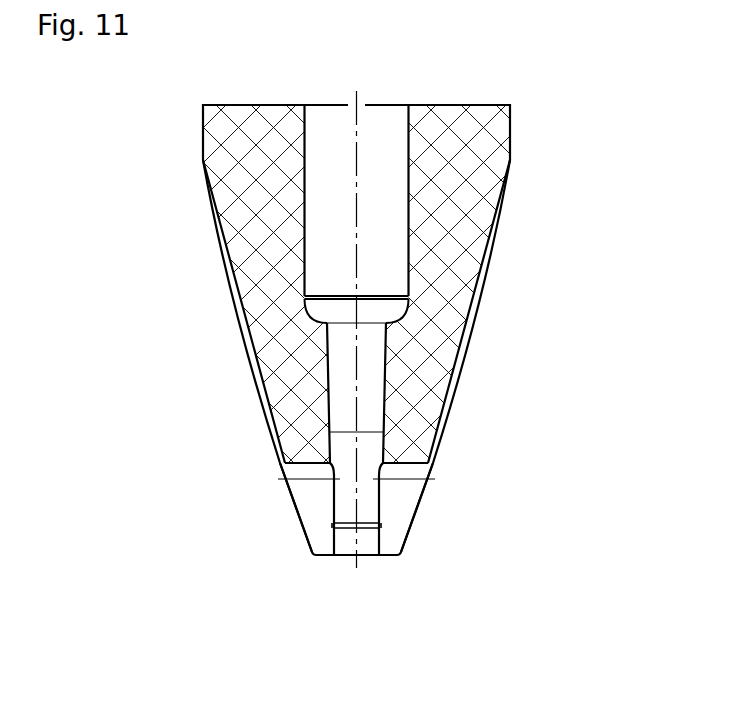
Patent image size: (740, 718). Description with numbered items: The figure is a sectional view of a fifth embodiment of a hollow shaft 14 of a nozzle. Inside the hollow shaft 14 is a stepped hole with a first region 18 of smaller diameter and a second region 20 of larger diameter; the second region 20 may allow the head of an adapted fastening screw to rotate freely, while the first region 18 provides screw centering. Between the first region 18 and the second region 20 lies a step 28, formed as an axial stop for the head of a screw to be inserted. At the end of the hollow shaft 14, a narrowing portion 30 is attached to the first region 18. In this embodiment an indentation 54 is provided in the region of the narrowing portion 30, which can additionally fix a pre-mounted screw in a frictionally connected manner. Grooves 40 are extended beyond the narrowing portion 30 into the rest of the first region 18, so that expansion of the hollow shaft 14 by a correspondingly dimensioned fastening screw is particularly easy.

The hollow shaft 14 is at (202, 148).
The first region 18 is at (393, 358).
The second region 20 is at (410, 183).
The step 28 is at (313, 308).
The narrowing portion 30 is at (343, 493).
The grooves 40 is at (393, 497).
The indentation 54 is at (378, 523).